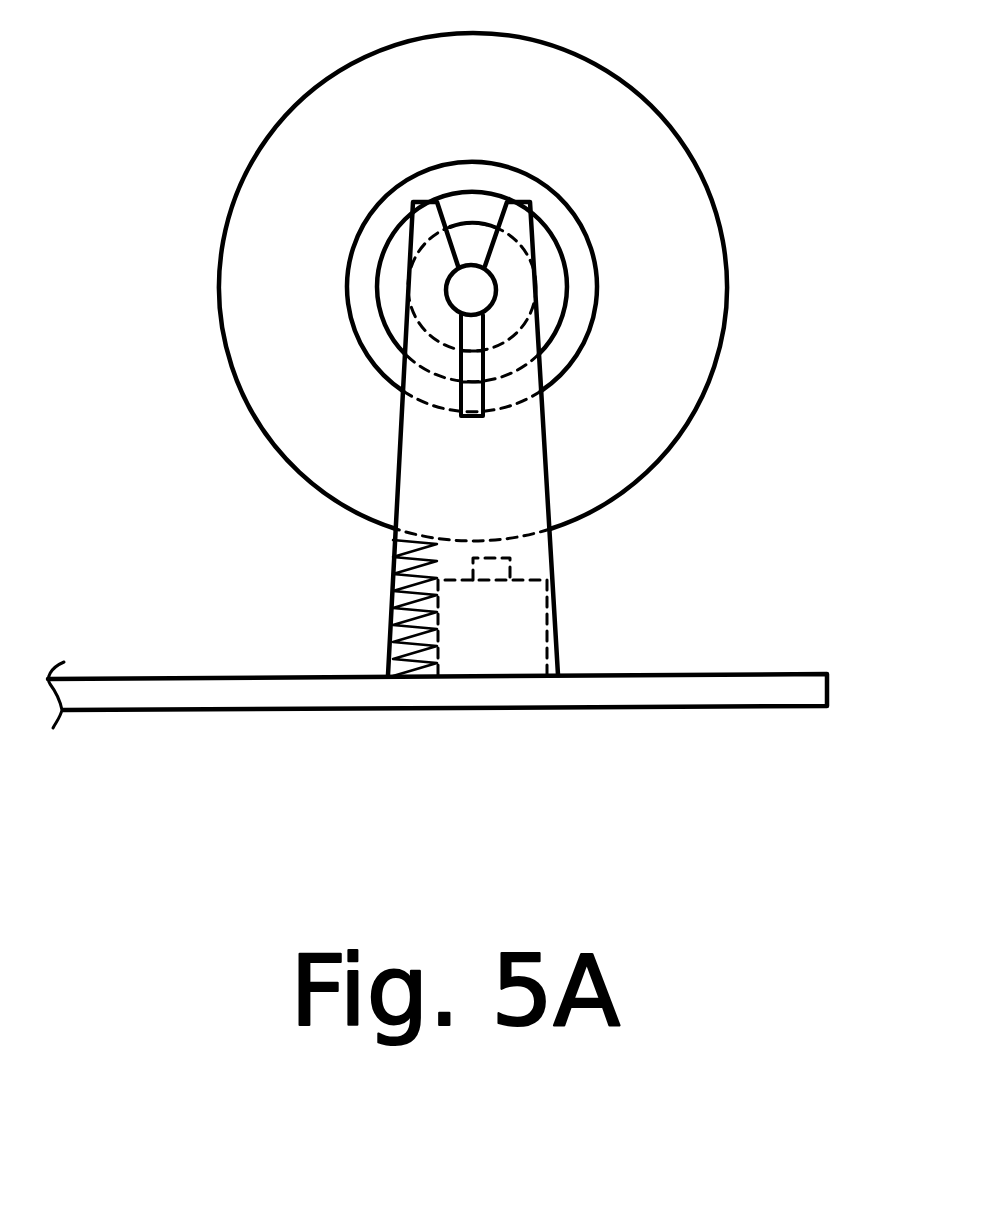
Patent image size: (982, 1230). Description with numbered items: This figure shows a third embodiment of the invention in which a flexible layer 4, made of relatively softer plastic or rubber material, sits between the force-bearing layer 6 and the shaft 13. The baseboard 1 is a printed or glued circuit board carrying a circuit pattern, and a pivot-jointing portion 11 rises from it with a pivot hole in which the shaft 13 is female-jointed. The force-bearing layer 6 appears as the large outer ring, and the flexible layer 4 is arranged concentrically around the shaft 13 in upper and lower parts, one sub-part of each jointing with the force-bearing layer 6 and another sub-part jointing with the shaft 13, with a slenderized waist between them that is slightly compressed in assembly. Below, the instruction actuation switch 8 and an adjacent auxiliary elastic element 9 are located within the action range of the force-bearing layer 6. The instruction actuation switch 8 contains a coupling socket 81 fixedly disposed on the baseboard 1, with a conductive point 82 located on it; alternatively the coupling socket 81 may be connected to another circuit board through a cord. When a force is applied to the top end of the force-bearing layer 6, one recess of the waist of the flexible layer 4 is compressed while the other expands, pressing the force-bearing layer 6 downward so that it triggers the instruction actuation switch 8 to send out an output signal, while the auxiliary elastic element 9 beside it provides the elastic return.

The baseboard 1 is at (777, 683).
The flexible layer 4 is at (575, 235).
The force-bearing layer 6 is at (592, 135).
The instruction actuation switch 8 is at (576, 676).
The coupling socket 81 is at (488, 655).
The conductive point 82 is at (500, 572).
The auxiliary elastic element 9 is at (390, 565).
The pivot-jointing portion 11 is at (548, 462).
The shaft 13 is at (467, 297).